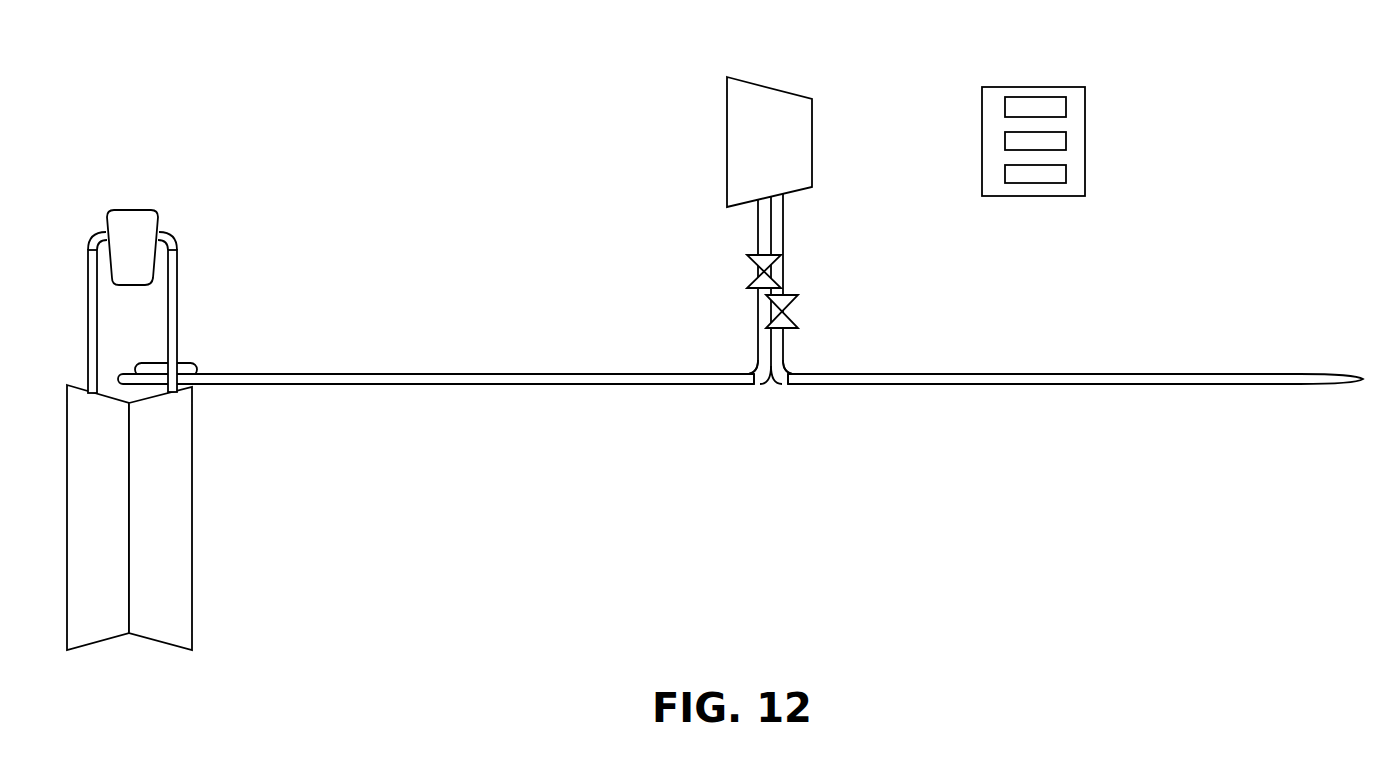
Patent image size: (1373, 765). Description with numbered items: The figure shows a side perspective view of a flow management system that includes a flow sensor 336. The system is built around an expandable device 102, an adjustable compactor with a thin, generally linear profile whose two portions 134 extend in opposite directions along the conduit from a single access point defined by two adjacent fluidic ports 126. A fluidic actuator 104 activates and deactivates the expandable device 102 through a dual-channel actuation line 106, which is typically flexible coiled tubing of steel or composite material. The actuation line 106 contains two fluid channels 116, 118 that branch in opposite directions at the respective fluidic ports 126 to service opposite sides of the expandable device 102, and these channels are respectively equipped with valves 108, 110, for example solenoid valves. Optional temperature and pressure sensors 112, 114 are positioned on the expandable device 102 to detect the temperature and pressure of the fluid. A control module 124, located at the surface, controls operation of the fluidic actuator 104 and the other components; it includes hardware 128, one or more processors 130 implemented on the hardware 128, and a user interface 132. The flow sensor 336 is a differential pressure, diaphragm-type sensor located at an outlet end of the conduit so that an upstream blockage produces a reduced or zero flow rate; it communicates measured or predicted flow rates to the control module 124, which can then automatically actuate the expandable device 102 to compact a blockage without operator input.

The expandable device 102 is at (740, 382).
The portions 134 is at (740, 382).
The fluidic actuator 104 is at (730, 137).
The dual-channel actuation line 106 is at (792, 205).
The valve 108 is at (757, 268).
The valve 110 is at (792, 307).
The temperature sensor 112 is at (211, 314).
The pressure sensor 114 is at (190, 362).
The fluid channel 116 is at (757, 233).
The fluid channel 118 is at (817, 303).
The control module 124 is at (1071, 107).
The fluidic ports 126 is at (755, 369).
The hardware 128 is at (1066, 108).
The processors 130 is at (1066, 142).
The user interface 132 is at (1066, 175).
The flow sensor 336 is at (68, 291).